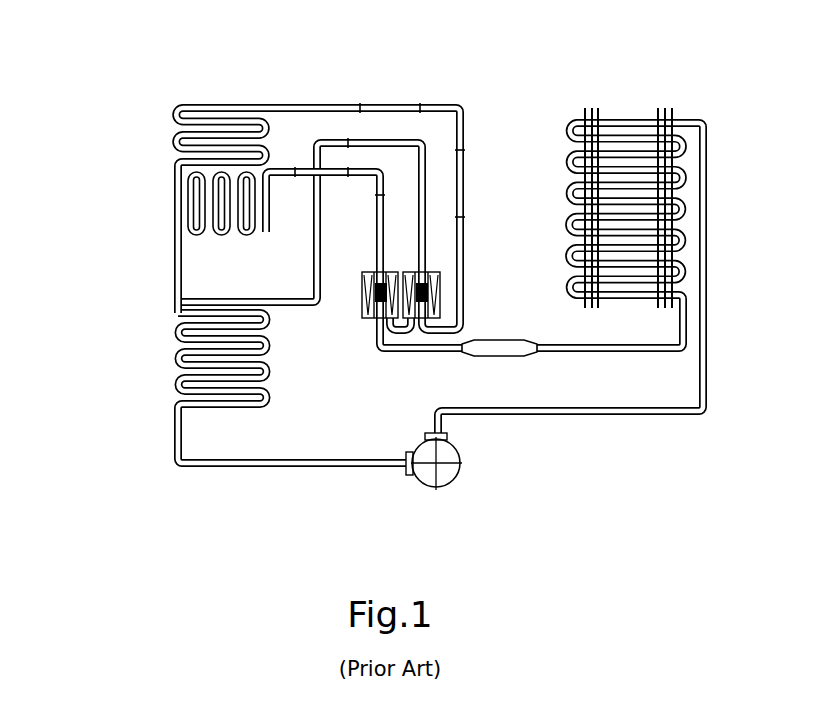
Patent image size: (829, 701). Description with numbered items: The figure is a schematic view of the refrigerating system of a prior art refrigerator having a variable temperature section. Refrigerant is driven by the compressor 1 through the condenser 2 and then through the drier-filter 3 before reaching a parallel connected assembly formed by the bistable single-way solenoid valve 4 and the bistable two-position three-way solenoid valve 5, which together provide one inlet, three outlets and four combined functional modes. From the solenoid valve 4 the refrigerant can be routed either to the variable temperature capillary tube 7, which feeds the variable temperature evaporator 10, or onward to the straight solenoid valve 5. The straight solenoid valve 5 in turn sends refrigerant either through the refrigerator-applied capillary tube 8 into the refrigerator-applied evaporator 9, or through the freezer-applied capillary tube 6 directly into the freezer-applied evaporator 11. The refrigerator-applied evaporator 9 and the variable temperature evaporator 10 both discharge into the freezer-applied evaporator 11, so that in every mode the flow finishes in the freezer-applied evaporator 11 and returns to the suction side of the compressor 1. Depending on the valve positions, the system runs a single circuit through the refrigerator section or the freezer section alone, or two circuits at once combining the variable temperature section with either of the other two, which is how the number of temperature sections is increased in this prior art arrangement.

The compressor 1 is at (432, 468).
The condenser 2 is at (578, 126).
The drier-filter 3 is at (481, 352).
The bistable single-way solenoid valve 4 is at (368, 300).
The bistable two-position three-way solenoid valve 5 is at (432, 293).
The freezer-applied capillary tube 6 is at (313, 225).
The variable temperature capillary tube 7 is at (365, 180).
The refrigerator-applied capillary tube 8 is at (320, 104).
The refrigerator-applied evaporator 9 is at (176, 113).
The variable temperature evaporator 10 is at (196, 195).
The freezer-applied evaporator 11 is at (185, 352).